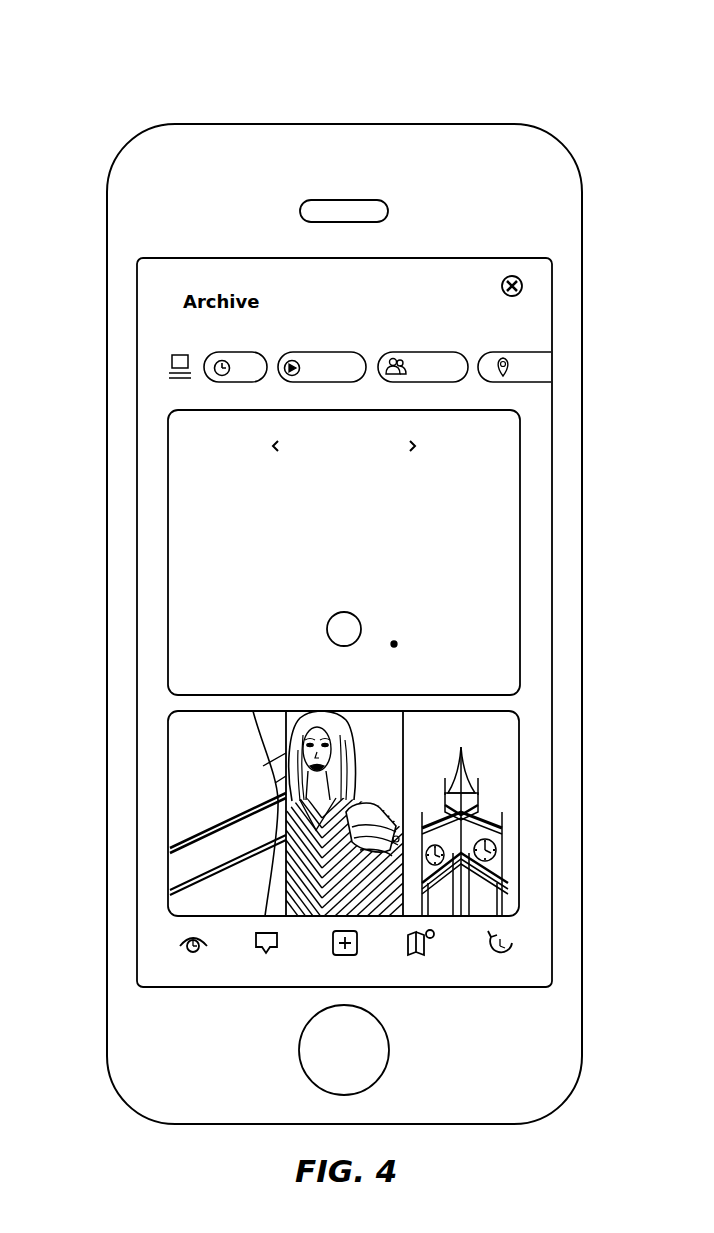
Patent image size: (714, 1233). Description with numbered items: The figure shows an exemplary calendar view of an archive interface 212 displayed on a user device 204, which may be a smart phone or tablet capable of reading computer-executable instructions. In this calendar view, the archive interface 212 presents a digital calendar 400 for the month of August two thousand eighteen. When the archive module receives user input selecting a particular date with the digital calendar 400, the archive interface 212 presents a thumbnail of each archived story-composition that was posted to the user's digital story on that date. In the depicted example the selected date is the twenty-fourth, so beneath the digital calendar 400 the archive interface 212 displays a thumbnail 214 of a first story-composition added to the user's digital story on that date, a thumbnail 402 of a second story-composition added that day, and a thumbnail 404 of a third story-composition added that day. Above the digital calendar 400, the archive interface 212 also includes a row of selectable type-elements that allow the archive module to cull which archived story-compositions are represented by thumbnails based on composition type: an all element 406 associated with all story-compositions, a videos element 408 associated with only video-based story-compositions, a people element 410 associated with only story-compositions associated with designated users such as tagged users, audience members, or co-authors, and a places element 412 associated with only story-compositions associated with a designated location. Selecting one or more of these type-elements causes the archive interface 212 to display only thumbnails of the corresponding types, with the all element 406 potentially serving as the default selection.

The user device 204 is at (100, 84).
The archive interface 212 is at (137, 477).
The thumbnail 214 is at (168, 810).
The digital calendar 400 is at (520, 489).
The thumbnail 402 is at (372, 712).
The thumbnail 404 is at (519, 803).
The all element 406 is at (235, 350).
The videos element 408 is at (323, 349).
The people element 410 is at (425, 350).
The places element 412 is at (532, 350).